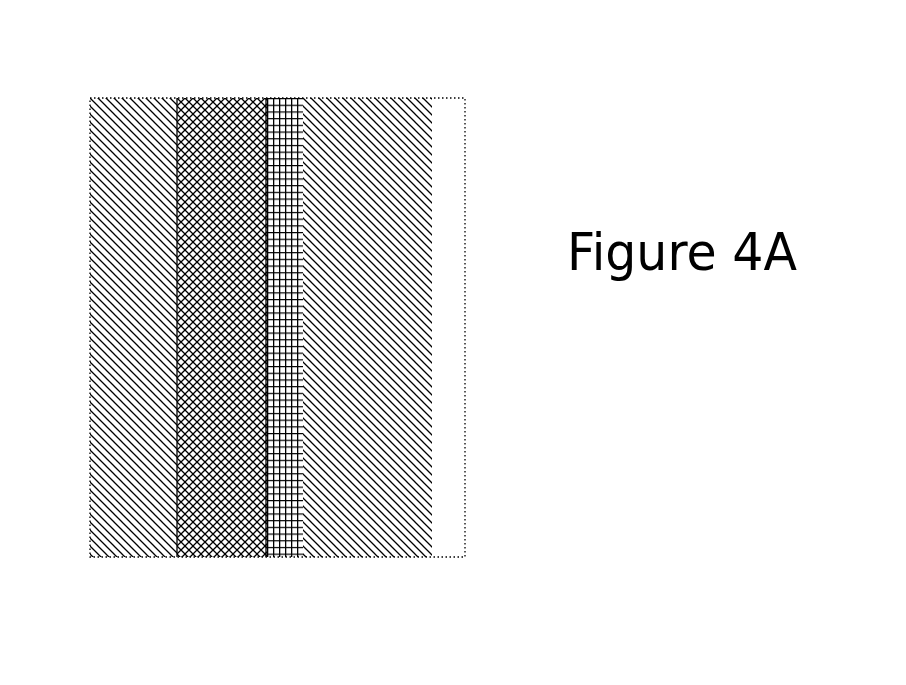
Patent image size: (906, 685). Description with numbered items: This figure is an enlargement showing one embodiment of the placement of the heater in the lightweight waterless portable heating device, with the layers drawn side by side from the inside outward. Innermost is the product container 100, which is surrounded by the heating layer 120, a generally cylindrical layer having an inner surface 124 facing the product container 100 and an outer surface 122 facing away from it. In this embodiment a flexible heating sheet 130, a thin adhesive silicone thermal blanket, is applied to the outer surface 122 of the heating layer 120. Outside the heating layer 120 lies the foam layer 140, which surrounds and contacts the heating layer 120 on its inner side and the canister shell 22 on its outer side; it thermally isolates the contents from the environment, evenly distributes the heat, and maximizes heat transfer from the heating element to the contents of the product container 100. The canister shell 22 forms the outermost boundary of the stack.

The canister shell 22 is at (465, 418).
The product container 100 is at (90, 98).
The heating layer 120 is at (198, 98).
The outer surface 122 is at (265, 557).
The inner surface 124 is at (177, 557).
The heating sheet 130 is at (284, 98).
The foam layer 140 is at (378, 97).